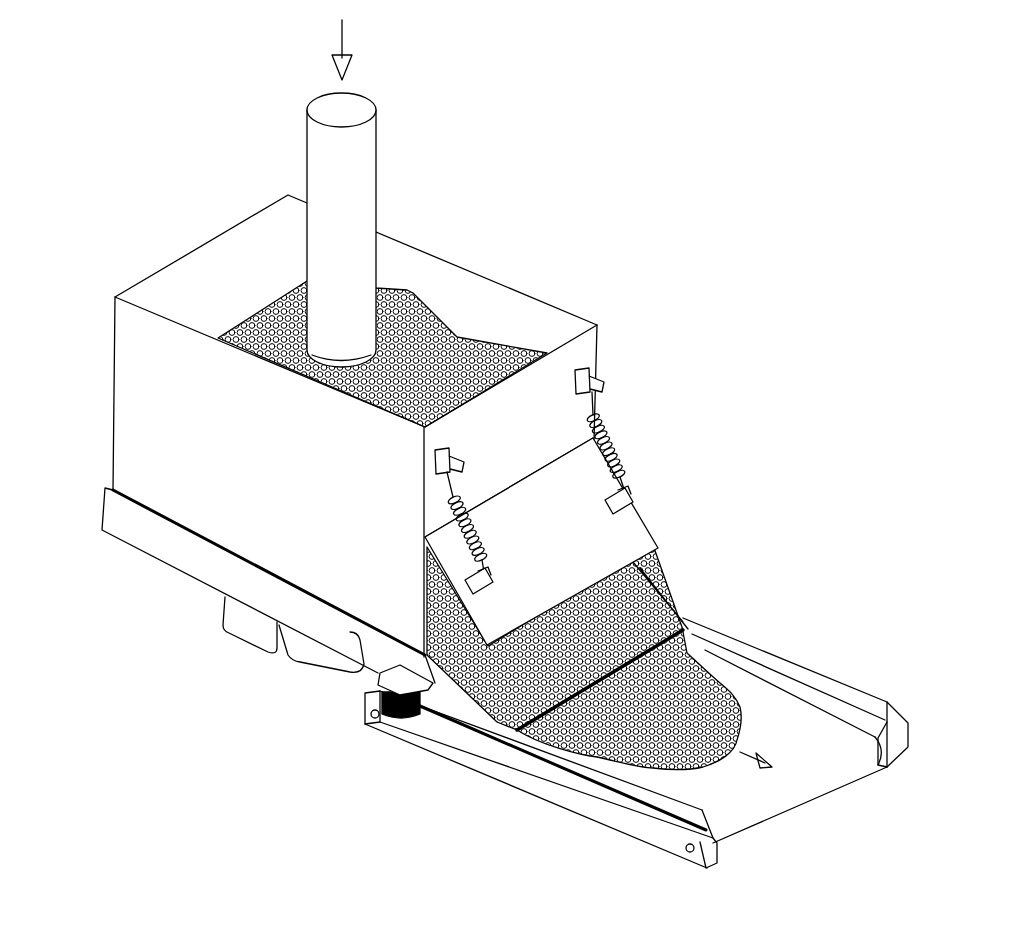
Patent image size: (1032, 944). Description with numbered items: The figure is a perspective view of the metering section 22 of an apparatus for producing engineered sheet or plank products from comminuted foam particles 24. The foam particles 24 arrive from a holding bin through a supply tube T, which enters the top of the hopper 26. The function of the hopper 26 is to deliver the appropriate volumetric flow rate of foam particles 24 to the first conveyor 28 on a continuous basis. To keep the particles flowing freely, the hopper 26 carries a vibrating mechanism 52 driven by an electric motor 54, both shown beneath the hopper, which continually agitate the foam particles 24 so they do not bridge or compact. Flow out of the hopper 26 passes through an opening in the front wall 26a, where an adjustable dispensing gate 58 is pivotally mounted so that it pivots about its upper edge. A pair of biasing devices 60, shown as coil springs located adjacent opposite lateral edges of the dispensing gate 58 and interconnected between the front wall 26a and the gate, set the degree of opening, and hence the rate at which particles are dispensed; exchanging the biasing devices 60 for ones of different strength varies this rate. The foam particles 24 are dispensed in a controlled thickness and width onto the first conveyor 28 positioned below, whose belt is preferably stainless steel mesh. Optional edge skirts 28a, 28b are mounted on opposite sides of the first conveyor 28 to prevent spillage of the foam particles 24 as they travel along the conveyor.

The supply tube T is at (362, 140).
The metering section 22 is at (705, 236).
The comminuted foam particles 24 is at (430, 325).
The hopper 26 is at (128, 378).
The front wall 26a is at (557, 440).
The first conveyor 28 is at (787, 728).
The edge skirt 28a is at (665, 802).
The edge skirt 28b is at (732, 645).
The vibrating mechanism 52 is at (247, 627).
The electric motor 54 is at (317, 663).
The dispensing gate 58 is at (565, 543).
The biasing device 60 is at (612, 420).